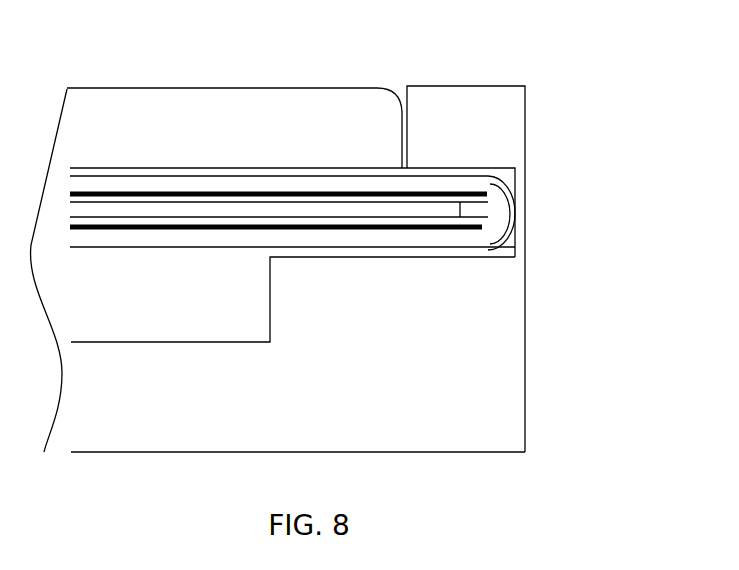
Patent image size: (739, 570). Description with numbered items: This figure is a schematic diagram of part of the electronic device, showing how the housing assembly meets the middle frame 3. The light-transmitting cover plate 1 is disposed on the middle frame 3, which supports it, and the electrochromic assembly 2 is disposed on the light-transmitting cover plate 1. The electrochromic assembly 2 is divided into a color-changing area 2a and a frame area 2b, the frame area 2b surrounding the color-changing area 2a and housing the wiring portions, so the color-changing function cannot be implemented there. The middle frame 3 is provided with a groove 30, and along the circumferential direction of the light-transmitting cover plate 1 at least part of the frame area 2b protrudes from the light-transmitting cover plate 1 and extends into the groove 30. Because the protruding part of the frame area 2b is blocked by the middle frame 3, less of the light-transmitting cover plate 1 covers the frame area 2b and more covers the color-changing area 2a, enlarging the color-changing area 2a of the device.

The light-transmitting cover plate 1 is at (193, 128).
The electrochromic assembly 2 is at (292, 197).
The color-changing area 2a is at (287, 232).
The frame area 2b is at (430, 233).
The middle frame 3 is at (500, 118).
The groove 30 is at (522, 185).